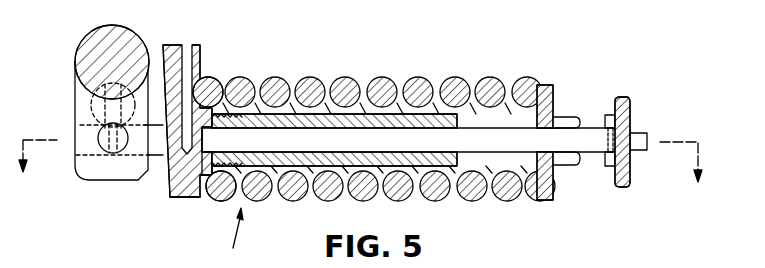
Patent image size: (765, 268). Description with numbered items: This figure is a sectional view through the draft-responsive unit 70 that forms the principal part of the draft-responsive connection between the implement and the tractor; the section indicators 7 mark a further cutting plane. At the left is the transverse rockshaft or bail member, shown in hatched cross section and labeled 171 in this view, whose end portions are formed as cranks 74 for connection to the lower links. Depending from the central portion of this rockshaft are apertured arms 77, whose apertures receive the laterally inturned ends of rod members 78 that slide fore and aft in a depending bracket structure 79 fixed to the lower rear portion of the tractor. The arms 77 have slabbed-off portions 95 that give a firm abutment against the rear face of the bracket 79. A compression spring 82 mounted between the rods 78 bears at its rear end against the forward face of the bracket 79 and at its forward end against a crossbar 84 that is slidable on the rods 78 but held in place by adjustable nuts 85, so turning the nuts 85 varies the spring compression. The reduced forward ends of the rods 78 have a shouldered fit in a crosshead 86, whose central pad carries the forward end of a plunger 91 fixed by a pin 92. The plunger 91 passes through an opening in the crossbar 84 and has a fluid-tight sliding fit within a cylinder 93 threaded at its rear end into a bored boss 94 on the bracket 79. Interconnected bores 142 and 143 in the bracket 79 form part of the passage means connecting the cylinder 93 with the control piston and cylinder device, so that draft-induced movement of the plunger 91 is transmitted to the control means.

The section line 7- 7 is at (358, 173).
The draft-responsive unit 70 is at (232, 238).
The cranks 74 is at (95, 107).
The apertured arms 77 is at (93, 165).
The rod members 78 is at (157, 157).
The depending bracket structure 79 is at (190, 198).
The compression spring 82 is at (346, 84).
The crossbar 84 is at (545, 90).
The adjustable nuts 85 is at (566, 119).
The crosshead 86 is at (630, 104).
The plunger 91 is at (303, 133).
The pin 92 is at (609, 115).
The cylinder 93 is at (412, 123).
The bored boss 94 is at (216, 92).
The slabbed-off portions 95 is at (146, 172).
The bore 142 is at (187, 60).
The bore 143 is at (209, 176).
The pivot bar 171 is at (100, 48).